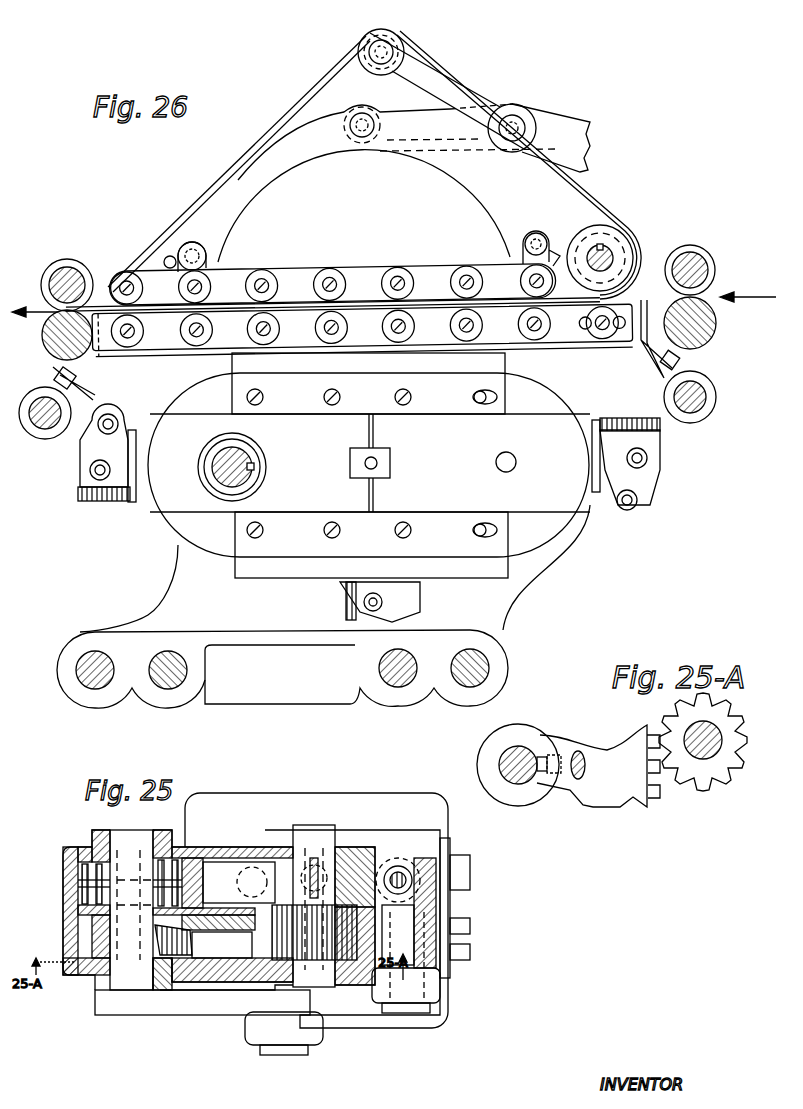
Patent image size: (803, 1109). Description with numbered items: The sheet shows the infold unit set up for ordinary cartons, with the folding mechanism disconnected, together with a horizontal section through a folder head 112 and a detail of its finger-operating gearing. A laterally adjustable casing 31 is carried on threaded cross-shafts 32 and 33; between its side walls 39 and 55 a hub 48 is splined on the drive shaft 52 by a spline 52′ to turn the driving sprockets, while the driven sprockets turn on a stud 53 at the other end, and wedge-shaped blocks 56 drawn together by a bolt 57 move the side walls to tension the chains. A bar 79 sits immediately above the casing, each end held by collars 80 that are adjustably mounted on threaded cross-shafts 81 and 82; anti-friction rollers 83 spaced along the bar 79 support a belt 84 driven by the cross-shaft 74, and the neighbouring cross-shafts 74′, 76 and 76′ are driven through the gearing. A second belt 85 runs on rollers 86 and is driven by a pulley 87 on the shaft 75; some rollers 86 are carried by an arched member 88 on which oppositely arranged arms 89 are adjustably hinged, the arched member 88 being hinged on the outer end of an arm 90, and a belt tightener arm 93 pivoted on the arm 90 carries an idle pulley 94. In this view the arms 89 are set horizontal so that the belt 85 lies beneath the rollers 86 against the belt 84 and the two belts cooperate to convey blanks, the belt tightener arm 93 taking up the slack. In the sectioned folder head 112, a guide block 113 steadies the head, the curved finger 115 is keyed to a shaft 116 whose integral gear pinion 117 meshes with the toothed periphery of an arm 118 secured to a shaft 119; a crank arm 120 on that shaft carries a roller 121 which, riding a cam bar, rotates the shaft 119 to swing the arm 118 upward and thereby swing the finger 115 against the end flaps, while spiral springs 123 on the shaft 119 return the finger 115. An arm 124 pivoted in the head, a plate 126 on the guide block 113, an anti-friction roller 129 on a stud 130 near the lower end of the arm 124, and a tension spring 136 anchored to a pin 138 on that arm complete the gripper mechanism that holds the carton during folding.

In FIG. 26, the casing 31 is at (152, 610).
In FIG. 26, the threaded cross-shaft 32 is at (80, 670).
In FIG. 26, the threaded cross-shaft 33 is at (185, 670).
In FIG. 26, the side wall 39 is at (162, 510).
In FIG. 26, the hub 48 is at (248, 480).
In FIG. 26, the drive shaft 52 is at (252, 455).
In FIG. 26, the spline 52′ is at (254, 467).
In FIG. 26, the stud 53 is at (514, 455).
In FIG. 26, the side wall 55 is at (548, 540).
In FIG. 26, the wedge-shaped block 56 is at (388, 456).
In FIG. 26, the bolt 57 is at (378, 465).
In FIG. 26, the cross-shaft 74 is at (50, 338).
In FIG. 26, the cross-shaft 74′ is at (50, 270).
In FIG. 26, the shaft 75 is at (604, 250).
In FIG. 26, the cross-shaft 76 is at (706, 258).
In FIG. 26, the cross-shaft 76′ is at (715, 322).
In FIG. 26, the bar 79 is at (370, 465).
In FIG. 26, the collar 80 is at (710, 384).
In FIG. 26, the cross-shaft 81 is at (700, 405).
In FIG. 26, the cross-shaft 82 is at (40, 425).
In FIG. 26, the anti-friction roller 83 is at (132, 338).
In FIG. 26, the belt 84 is at (122, 354).
In FIG. 26, the belt 85 is at (267, 121).
In FIG. 26, the roller 86 is at (143, 291).
In FIG. 26, the pulley 87 is at (607, 228).
In FIG. 26, the arched member 88 is at (292, 163).
In FIG. 26, the arm 89 is at (292, 270).
In FIG. 26, the arm 90 is at (552, 112).
In FIG. 26, the belt tightener arm 93 is at (462, 80).
In FIG. 26, the idle pulley 94 is at (404, 36).
In FIG. 26, the folder head 112 is at (80, 478).
In FIG. 25, the folder head 112 is at (63, 935).
In FIG. 25, the guide block 113 is at (232, 795).
In FIG. 25, the curved finger 115 is at (218, 868).
In FIG. 25-A, the shaft 116 is at (718, 748).
In FIG. 25, the shaft 116 is at (312, 830).
In FIG. 25-A, the gear pinion 117 is at (735, 715).
In FIG. 25, the gear pinion 117 is at (315, 950).
In FIG. 25-A, the arm 118 is at (600, 738).
In FIG. 25, the arm 118 is at (208, 920).
In FIG. 25-A, the shaft 119 is at (500, 760).
In FIG. 25, the shaft 119 is at (135, 990).
In FIG. 25, the crank arm 120 is at (178, 1008).
In FIG. 25, the roller 121 is at (258, 1042).
In FIG. 25, the spiral spring 123 is at (78, 868).
In FIG. 25, the arm 124 is at (440, 928).
In FIG. 25, the plate 126 is at (470, 902).
In FIG. 25, the anti-friction roller 129 is at (440, 985).
In FIG. 25, the stud 130 is at (415, 1013).
In FIG. 25, the tension spring 136 is at (405, 872).
In FIG. 25, the pin 138 is at (436, 880).